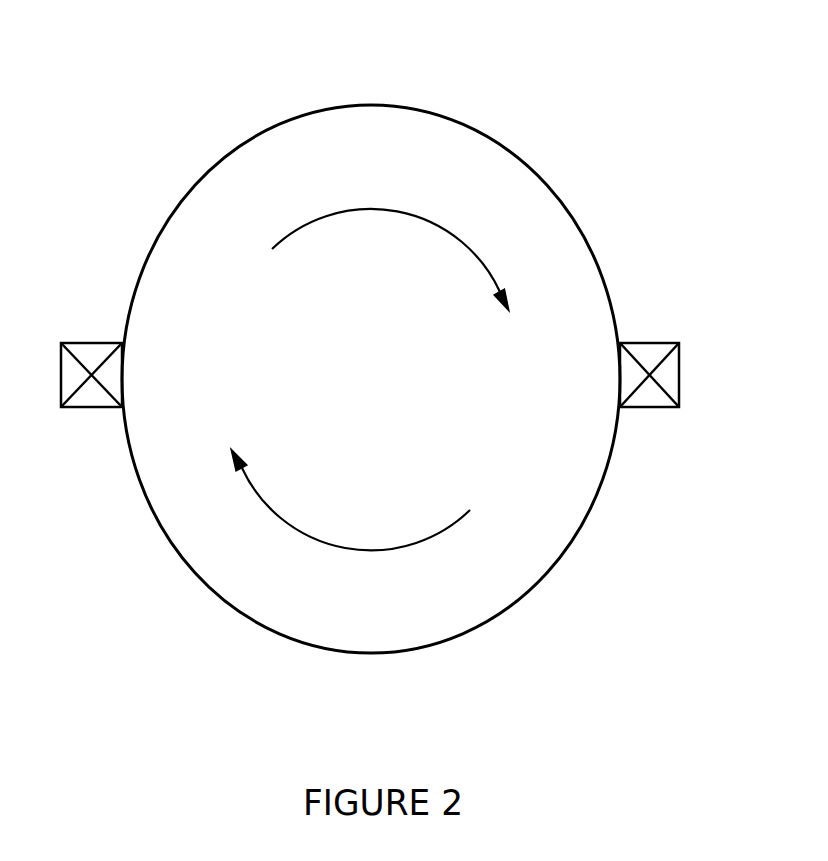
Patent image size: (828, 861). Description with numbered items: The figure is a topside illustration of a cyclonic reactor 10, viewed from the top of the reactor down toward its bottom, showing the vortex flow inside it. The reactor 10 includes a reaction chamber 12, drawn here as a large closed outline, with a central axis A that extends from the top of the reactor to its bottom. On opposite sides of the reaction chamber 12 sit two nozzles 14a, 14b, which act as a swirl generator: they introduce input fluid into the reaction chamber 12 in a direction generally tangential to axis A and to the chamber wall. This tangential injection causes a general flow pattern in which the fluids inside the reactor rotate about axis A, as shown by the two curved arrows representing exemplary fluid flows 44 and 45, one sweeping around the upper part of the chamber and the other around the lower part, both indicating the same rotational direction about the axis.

The reactor 10 is at (369, 31).
The reaction chamber 12 is at (493, 185).
The nozzle 14a is at (83, 342).
The nozzle 14b is at (643, 342).
The fluid flow 44 is at (325, 543).
The fluid flow 45 is at (358, 208).